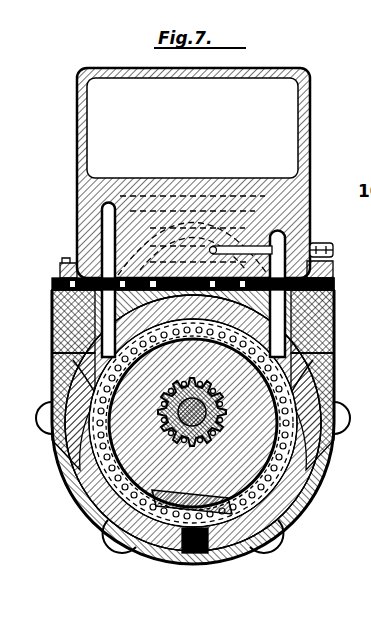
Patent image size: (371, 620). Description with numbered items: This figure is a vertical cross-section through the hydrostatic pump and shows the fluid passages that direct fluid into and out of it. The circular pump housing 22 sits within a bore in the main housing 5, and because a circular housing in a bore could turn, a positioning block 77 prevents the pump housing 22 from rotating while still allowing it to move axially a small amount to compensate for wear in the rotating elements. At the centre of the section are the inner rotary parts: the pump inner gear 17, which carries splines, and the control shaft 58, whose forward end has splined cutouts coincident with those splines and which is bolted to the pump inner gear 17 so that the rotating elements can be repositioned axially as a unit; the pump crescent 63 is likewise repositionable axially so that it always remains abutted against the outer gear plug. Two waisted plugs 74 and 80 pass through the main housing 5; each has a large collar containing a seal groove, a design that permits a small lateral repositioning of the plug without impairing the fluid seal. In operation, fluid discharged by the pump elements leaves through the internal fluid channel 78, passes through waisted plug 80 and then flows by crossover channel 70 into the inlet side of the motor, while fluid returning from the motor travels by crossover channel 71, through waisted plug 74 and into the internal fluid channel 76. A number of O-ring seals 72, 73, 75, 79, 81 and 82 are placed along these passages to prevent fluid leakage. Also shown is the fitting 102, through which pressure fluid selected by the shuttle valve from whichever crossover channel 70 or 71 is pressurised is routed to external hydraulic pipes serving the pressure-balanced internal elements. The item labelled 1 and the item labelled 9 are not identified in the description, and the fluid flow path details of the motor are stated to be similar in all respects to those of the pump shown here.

The housing 1 is at (77, 145).
The main housing 5 is at (62, 472).
The gear 9 is at (222, 399).
The pump inner gear 17 is at (263, 357).
The pump housing 22 is at (307, 505).
The control shaft 58 is at (220, 432).
The pump crescent 63 is at (172, 505).
The crossover channel 70 is at (99, 214).
The crossover channel 71 is at (217, 193).
The O-ring seal 72 is at (328, 272).
The O-ring seal 73 is at (334, 285).
The waisted plug 74 is at (300, 320).
The O-ring seal 75 is at (300, 352).
The internal fluid channel 76 is at (295, 432).
The positioning block 77 is at (233, 558).
The internal fluid channel 78 is at (83, 493).
The O-ring seal 79 is at (93, 352).
The waisted plug 80 is at (97, 315).
The O-ring seal 81 is at (52, 284).
The O-ring seal 82 is at (75, 267).
The fitting 102 is at (358, 159).